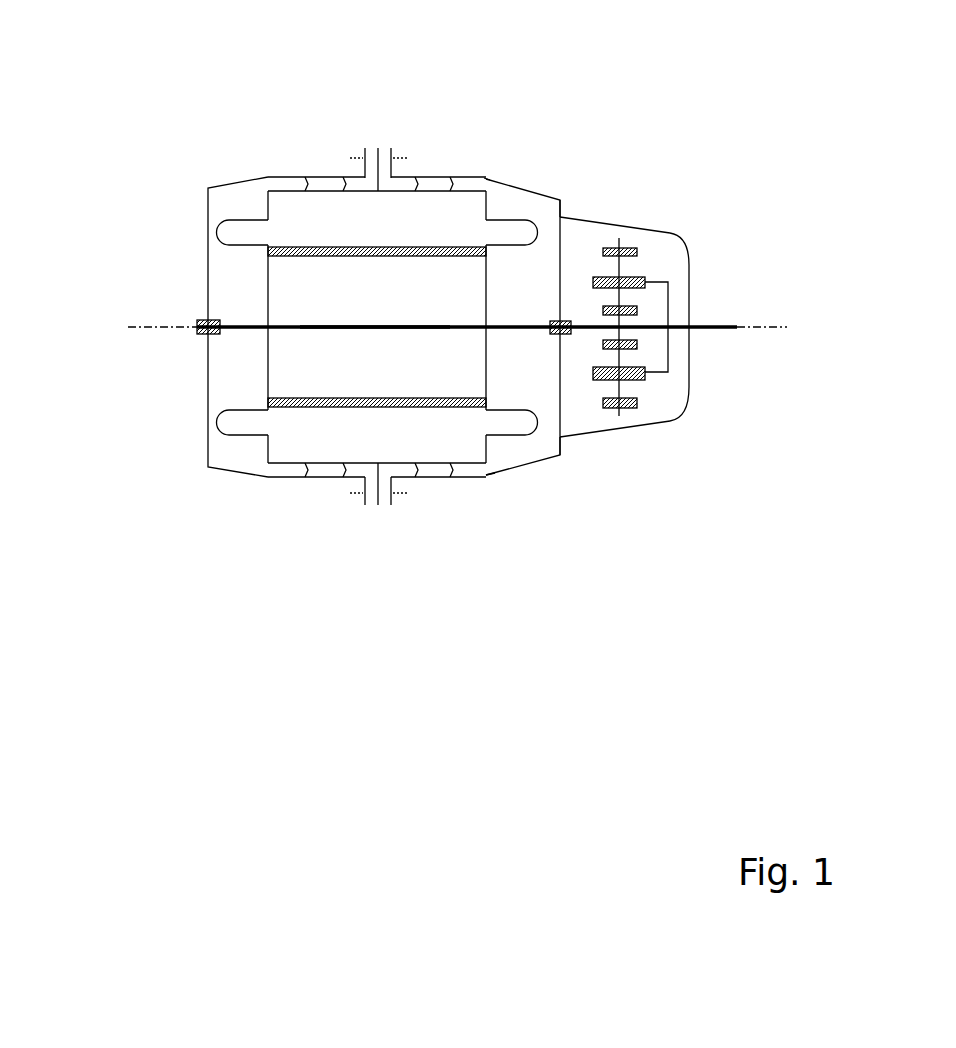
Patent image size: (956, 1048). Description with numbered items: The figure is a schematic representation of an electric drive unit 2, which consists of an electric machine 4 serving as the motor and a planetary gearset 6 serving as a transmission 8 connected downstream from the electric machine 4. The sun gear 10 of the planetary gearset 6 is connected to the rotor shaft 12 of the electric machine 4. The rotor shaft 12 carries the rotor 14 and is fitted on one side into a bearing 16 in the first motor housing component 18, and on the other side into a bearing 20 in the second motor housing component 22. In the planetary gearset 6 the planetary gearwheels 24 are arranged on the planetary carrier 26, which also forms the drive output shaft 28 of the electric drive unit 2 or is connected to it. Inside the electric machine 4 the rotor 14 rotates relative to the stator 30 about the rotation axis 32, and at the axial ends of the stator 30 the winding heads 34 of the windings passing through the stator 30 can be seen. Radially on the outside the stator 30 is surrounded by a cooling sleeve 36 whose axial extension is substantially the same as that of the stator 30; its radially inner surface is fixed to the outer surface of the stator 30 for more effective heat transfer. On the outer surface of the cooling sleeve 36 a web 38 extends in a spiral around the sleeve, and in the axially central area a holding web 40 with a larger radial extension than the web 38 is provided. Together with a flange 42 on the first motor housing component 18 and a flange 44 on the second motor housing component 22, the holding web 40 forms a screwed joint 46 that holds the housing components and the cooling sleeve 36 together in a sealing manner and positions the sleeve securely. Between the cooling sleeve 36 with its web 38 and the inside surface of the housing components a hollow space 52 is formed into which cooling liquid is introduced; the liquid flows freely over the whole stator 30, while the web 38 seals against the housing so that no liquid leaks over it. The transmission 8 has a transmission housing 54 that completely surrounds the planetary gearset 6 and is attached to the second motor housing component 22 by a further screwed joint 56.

The electric drive unit 2 is at (583, 147).
The electric machine 4 is at (333, 157).
The planetary gearset 6 is at (643, 260).
The transmission 8 is at (655, 210).
The sun gear 10 is at (645, 312).
The rotor shaft 12 is at (560, 440).
The rotor 14 is at (313, 290).
The bearing 16 is at (203, 333).
The first motor housing component 18 is at (207, 423).
The bearing 20 is at (565, 335).
The second motor housing component 22 is at (497, 478).
The planetary gearwheels 24 is at (623, 392).
The planetary carrier 26 is at (668, 352).
The drive output shaft 28 is at (693, 325).
The stator 30 is at (255, 190).
The rotation axis 32 is at (152, 327).
The winding heads 34 is at (243, 232).
The cooling sleeve 36 is at (288, 217).
The web 38 is at (482, 175).
The holding web 40 is at (378, 148).
The flange 42 is at (363, 158).
The flange 44 is at (407, 158).
The screwed joint 46 is at (392, 148).
The hollow space 52 is at (322, 182).
The transmission housing 54 is at (680, 403).
The screwed joint 56 is at (567, 205).